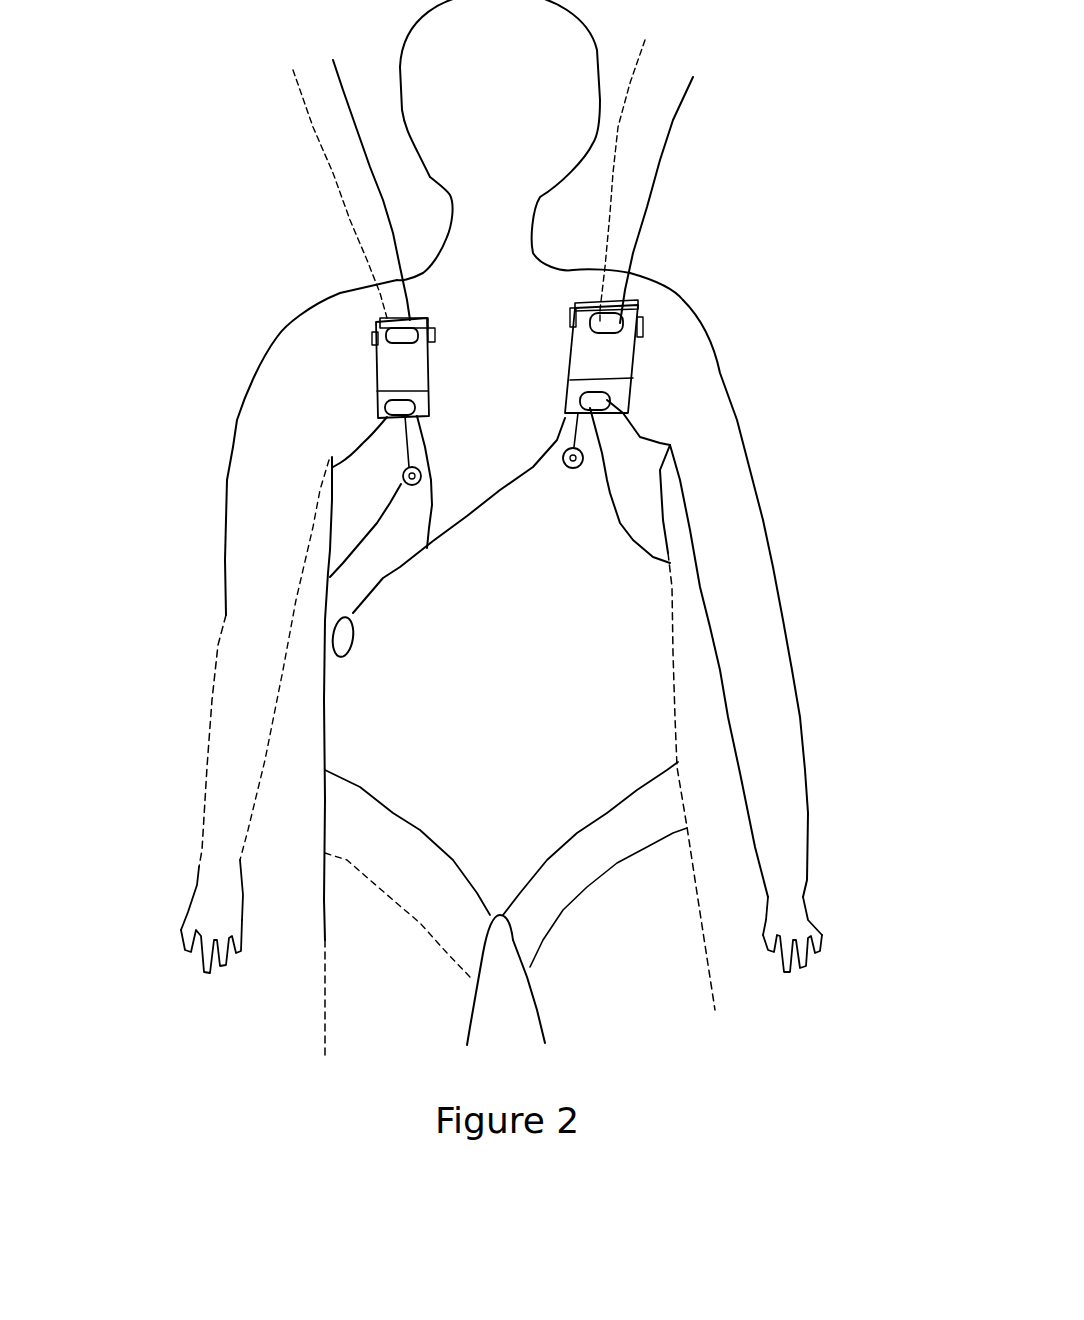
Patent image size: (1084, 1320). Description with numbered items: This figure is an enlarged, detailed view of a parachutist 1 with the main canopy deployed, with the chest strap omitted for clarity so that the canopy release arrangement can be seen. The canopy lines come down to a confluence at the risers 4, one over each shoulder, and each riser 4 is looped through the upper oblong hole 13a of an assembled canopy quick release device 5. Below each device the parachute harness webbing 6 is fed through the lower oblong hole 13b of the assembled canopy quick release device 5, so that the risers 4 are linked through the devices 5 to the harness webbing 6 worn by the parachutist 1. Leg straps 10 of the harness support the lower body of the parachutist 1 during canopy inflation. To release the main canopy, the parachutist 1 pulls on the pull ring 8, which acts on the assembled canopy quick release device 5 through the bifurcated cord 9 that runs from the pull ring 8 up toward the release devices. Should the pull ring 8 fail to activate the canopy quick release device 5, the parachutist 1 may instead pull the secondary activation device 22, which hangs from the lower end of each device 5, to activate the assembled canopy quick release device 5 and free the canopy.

The parachutist 1 is at (597, 690).
The risers 4 is at (340, 128).
The assembled canopy quick release device 5 is at (397, 360).
The parachute harness webbing 6 is at (357, 484).
The pull ring 8 is at (333, 634).
The bifurcated cord 9 is at (462, 522).
The leg straps 10 is at (397, 866).
The upper oblong hole 13a is at (627, 322).
The lower oblong hole 13b is at (612, 395).
The secondary activation device 22 is at (395, 472).